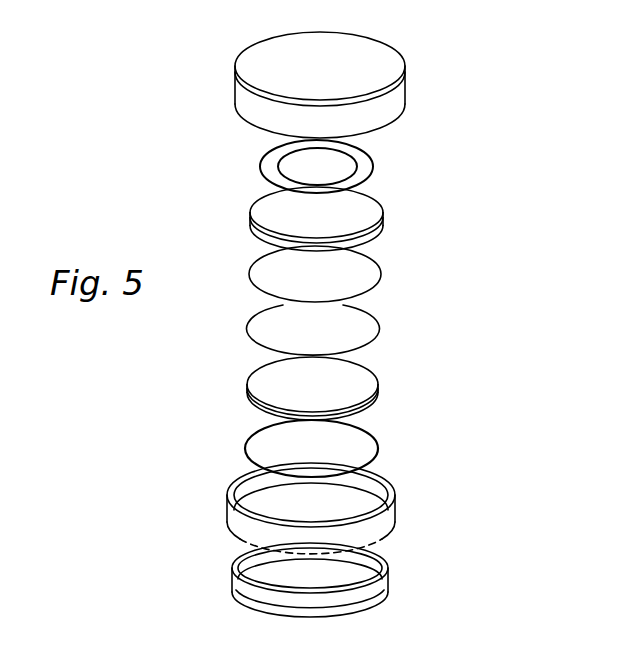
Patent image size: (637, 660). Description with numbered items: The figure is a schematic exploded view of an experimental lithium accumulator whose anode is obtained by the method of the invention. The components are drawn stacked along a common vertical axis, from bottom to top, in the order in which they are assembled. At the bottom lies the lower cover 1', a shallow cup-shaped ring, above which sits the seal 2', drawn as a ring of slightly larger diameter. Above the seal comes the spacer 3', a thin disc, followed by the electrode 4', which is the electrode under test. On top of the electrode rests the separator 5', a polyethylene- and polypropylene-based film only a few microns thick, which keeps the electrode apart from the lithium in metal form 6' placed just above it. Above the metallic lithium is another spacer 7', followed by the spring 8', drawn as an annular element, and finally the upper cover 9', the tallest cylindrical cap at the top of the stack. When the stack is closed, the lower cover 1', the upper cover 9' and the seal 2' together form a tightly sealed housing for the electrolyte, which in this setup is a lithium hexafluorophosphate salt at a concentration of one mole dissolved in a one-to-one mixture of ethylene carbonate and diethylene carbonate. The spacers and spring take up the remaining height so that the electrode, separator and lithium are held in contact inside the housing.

The lower cover 1' is at (379, 580).
The seal 2' is at (377, 508).
The spacer 3' is at (386, 448).
The electrode 4' is at (387, 388).
The separator 5' is at (387, 330).
The lithium in metal form 6' is at (388, 274).
The another spacer 7' is at (388, 219).
The spring 8' is at (393, 166).
The upper cover 9' is at (381, 85).